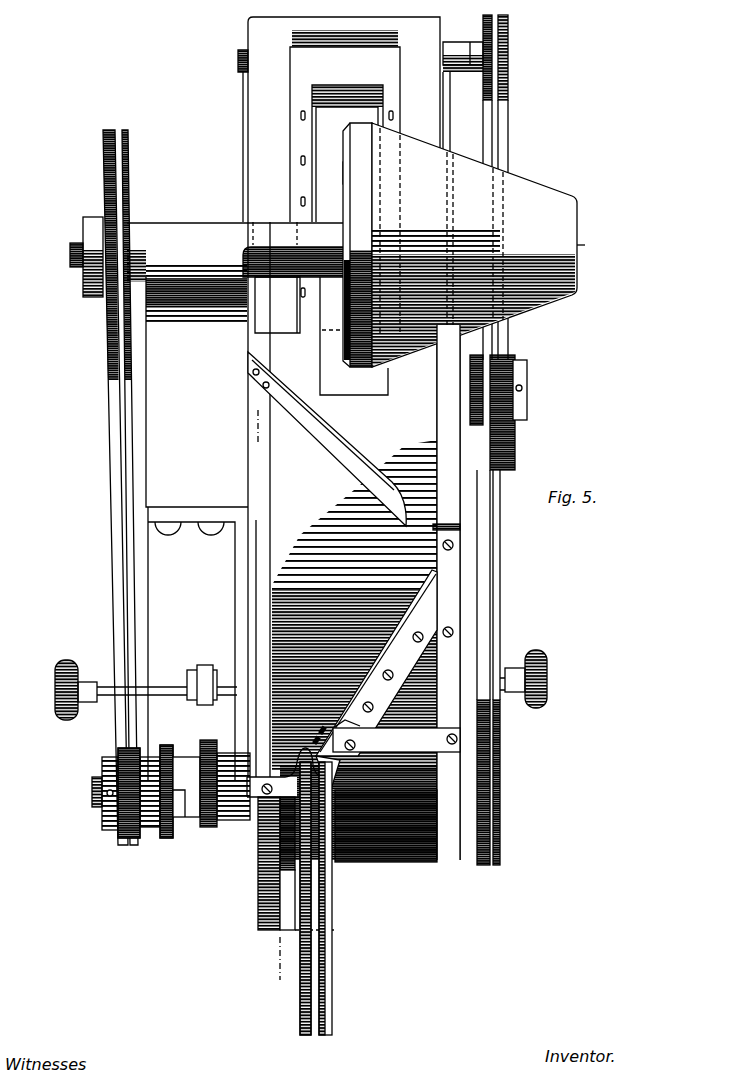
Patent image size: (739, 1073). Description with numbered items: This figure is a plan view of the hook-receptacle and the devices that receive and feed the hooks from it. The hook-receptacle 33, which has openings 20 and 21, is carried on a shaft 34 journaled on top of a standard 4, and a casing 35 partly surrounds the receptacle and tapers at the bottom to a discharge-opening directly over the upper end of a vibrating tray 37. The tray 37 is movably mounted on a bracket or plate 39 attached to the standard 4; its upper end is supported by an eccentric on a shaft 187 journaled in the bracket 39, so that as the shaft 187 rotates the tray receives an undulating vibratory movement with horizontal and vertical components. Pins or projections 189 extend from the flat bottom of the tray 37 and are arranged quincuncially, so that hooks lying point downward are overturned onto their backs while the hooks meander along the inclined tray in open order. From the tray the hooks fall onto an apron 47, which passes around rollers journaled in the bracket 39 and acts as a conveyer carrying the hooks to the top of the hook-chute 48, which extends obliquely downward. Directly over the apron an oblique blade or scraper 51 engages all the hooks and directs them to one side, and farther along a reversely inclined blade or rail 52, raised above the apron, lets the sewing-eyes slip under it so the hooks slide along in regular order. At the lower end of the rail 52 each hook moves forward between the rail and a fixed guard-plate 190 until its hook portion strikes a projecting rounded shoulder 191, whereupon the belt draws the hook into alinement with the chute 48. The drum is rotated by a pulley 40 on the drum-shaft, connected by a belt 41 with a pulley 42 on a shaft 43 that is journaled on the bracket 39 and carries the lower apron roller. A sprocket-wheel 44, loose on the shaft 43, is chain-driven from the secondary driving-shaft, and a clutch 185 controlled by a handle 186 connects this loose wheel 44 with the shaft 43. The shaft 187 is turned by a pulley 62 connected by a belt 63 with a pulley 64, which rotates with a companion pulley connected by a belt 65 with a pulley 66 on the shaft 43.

The standard 4 is at (191, 643).
The opening 20 is at (592, 248).
The opening 21 is at (344, 176).
The hook-receptacle 33 is at (537, 191).
The shaft 34 is at (78, 270).
The casing 35 is at (376, 384).
The vibrating tray 37 is at (347, 139).
The bracket 39 is at (244, 148).
The pulley 40 is at (127, 197).
The belt 41 is at (115, 538).
The pulley 42 is at (140, 839).
The shaft 43 is at (97, 807).
The sprocket-wheel 44 is at (177, 838).
The apron 47 is at (428, 858).
The hook-chute 48 is at (324, 882).
The blade 51 is at (348, 464).
The rail 52 is at (390, 630).
The pulley 62 is at (508, 37).
The belt 63 is at (500, 139).
The pulley 64 is at (516, 440).
The belt 65 is at (486, 578).
The pulley 66 is at (502, 760).
The clutch 185 is at (183, 767).
The handle 186 is at (57, 720).
The shaft 187 is at (446, 48).
The pins 189 is at (301, 201).
The guard-plate 190 is at (290, 784).
The rounded shoulder 191 is at (277, 853).